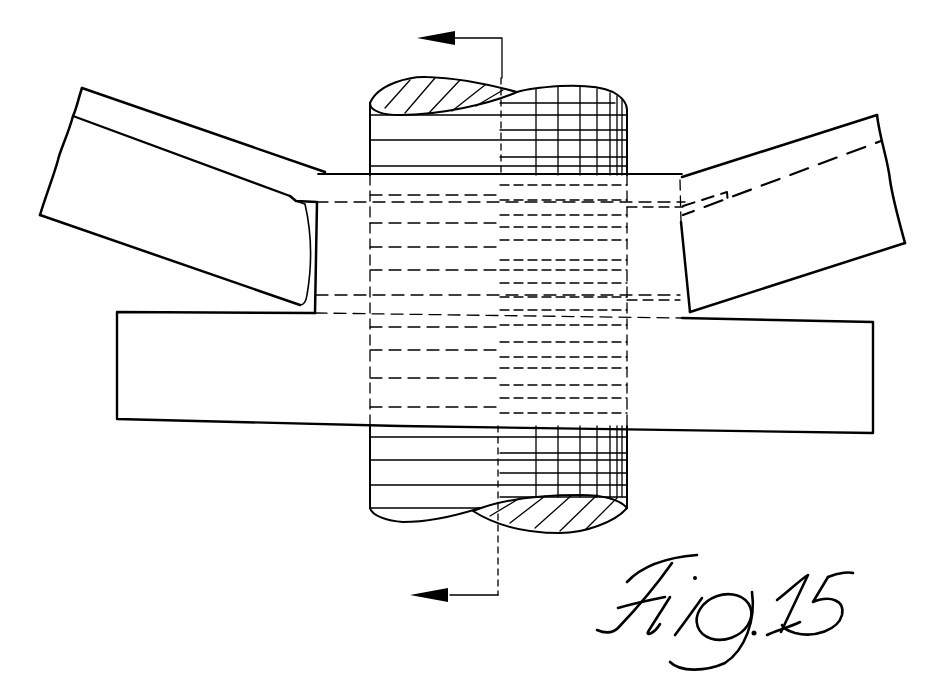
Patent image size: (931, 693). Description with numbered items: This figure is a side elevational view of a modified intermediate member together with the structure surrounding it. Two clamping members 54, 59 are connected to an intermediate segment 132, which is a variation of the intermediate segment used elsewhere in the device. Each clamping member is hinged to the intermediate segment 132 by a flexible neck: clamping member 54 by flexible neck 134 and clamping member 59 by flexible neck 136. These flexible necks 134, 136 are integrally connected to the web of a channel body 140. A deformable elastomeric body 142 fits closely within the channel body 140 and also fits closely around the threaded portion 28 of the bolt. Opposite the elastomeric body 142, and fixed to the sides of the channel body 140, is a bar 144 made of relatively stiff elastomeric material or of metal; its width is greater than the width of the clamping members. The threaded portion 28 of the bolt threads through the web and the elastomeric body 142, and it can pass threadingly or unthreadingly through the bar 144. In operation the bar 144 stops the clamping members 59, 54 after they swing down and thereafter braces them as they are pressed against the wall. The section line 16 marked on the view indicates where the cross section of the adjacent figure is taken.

The section line 16- 16 is at (453, 301).
The threaded portion 28 is at (627, 108).
The clamping member 54 is at (820, 273).
The clamping member 59 is at (140, 252).
The intermediate segment 132 is at (652, 177).
The flexible neck 134 is at (715, 182).
The flexible neck 136 is at (326, 183).
The channel body 140 is at (488, 190).
The deformable elastomeric body 142 is at (657, 302).
The bar 144 is at (700, 434).